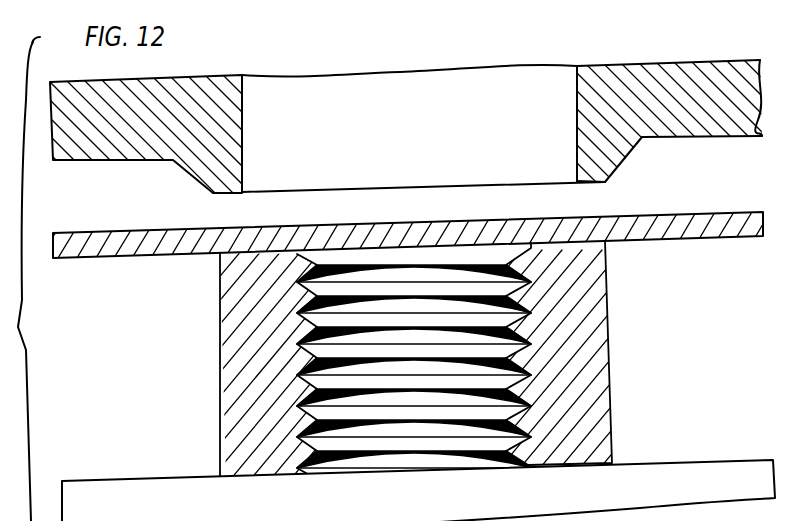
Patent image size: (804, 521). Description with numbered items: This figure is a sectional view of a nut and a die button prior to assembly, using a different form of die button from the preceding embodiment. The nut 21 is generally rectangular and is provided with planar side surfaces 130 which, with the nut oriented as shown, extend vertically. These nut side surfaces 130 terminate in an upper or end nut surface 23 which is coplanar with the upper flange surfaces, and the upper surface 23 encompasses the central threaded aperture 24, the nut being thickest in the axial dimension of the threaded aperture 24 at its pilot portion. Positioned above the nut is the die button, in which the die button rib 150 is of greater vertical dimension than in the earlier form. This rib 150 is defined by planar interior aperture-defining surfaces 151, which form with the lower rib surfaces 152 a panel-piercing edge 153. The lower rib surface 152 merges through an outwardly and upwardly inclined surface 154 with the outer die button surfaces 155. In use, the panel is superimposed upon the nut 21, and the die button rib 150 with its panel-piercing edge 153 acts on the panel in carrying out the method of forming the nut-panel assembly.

The nut 21 is at (618, 318).
The upper surface 23 is at (580, 236).
The threaded aperture 24 is at (518, 417).
The planar side surfaces 130 is at (416, 360).
The die button rib 150 is at (630, 114).
The interior aperture-defining surfaces 151 is at (577, 97).
The lower rib surfaces 152 is at (590, 188).
The panel-piercing edge 153 is at (578, 178).
The outwardly and upwardly inclined surface 154 is at (637, 147).
The outer die button surfaces 155 is at (727, 133).